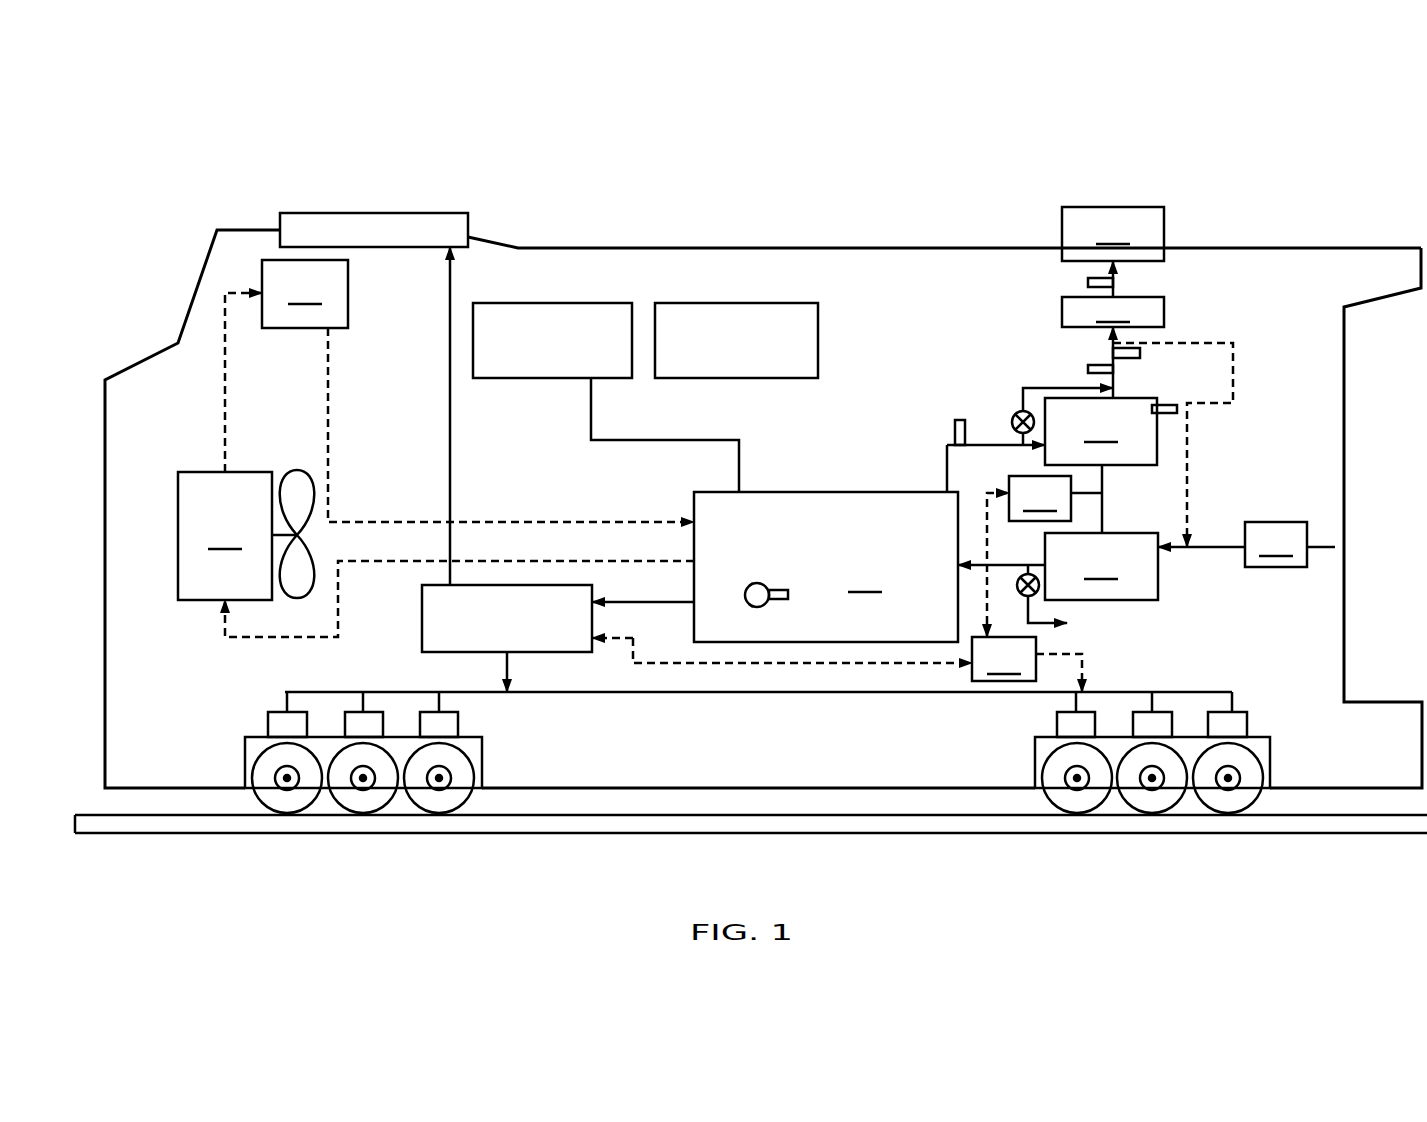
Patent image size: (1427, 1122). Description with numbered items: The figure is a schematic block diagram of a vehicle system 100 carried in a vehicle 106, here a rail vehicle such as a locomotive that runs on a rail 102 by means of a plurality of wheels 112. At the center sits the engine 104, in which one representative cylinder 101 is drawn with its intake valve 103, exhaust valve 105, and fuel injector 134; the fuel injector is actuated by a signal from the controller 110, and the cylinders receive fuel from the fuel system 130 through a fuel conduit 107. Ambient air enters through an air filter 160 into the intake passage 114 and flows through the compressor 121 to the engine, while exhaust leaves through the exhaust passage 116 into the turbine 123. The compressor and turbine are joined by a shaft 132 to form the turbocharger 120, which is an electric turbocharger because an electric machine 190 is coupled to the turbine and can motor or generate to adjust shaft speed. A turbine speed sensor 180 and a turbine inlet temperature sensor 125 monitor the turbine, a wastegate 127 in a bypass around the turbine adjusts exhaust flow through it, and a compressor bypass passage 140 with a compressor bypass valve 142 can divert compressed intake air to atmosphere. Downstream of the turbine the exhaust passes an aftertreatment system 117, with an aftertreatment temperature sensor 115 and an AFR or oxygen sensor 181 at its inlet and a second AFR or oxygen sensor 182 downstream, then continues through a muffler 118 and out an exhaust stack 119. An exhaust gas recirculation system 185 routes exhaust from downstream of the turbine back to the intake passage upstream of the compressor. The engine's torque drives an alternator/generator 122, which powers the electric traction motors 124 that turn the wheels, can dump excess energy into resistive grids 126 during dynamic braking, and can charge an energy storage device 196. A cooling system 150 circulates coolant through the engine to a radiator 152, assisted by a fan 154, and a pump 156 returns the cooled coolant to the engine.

The vehicle system 100 is at (1370, 135).
The cylinder 101 is at (764, 584).
The rail 102 is at (1345, 835).
The intake valve 103 is at (750, 588).
The engine 104 is at (782, 577).
The exhaust valve 105 is at (752, 606).
The vehicle 106 is at (925, 249).
The fuel conduit 107 is at (590, 403).
The controller 110 is at (712, 303).
The wheels 112 is at (463, 770).
The intake passage 114 is at (993, 565).
The aftertreatment temperature sensor 115 is at (1088, 368).
The exhaust passage 116 is at (1115, 375).
The aftertreatment system 117 is at (1113, 312).
The muffler 118 is at (1150, 261).
The exhaust stack 119 is at (1113, 234).
The turbocharger 120 is at (1152, 610).
The compressor 121 is at (1101, 566).
The alternator/generator 122 is at (422, 622).
The turbine 123 is at (1101, 431).
The electric traction motors 124 is at (458, 722).
The turbine inlet temperature sensor 125 is at (955, 430).
The resistive grids 126 is at (447, 213).
The wastegate 127 is at (1022, 411).
The fuel system 130 is at (550, 303).
The shaft 132 is at (1102, 525).
The fuel injector 134 is at (782, 599).
The compressor bypass passage 140 is at (1047, 626).
The compressor bypass valve 142 is at (1018, 578).
The cooling system 150 is at (200, 428).
The radiator 152 is at (225, 536).
The fan 154 is at (305, 468).
The pump 156 is at (305, 294).
The air filter 160 is at (1276, 544).
The turbine speed sensor 180 is at (1177, 405).
The AFR sensor or O2 sensor 181 is at (1140, 352).
The AFR sensor or O2 sensor 182 is at (1088, 282).
The exhaust gas recirculation system 185 is at (1233, 345).
The electric machine 190 is at (1055, 498).
The energy storage device 196 is at (1027, 592).